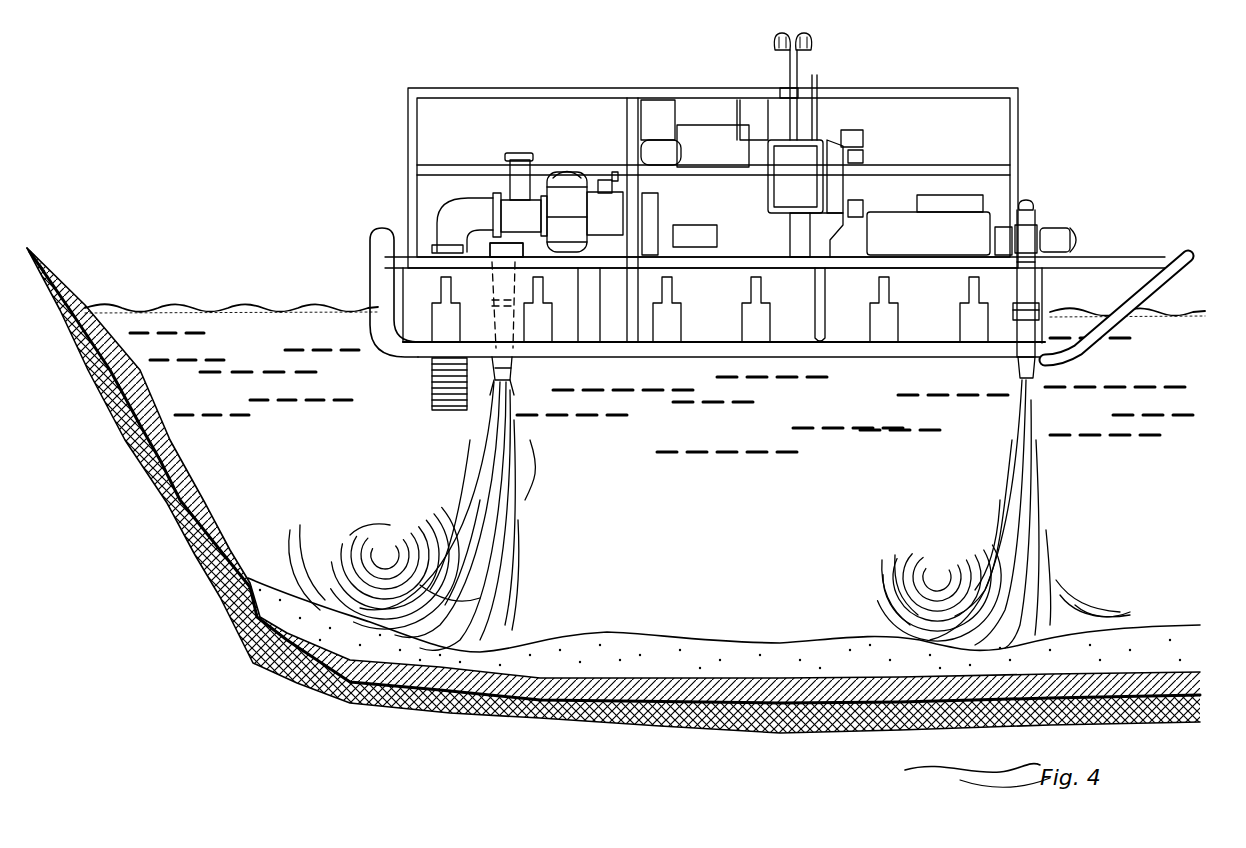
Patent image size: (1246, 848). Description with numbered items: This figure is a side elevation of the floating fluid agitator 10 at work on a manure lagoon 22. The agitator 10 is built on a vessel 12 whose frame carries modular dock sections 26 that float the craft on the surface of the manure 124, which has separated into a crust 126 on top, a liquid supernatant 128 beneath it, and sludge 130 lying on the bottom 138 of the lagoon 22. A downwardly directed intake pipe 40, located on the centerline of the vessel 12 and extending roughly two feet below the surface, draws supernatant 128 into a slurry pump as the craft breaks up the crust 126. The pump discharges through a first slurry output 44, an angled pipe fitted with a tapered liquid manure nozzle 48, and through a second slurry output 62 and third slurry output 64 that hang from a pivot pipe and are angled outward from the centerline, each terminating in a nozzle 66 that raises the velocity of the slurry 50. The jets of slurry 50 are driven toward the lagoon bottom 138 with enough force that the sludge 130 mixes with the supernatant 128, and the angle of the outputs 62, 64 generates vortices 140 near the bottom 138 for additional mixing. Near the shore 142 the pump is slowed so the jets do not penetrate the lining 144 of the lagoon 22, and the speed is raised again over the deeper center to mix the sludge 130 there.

The floating fluid agitator 10 is at (508, 88).
The vessel 12 is at (1150, 262).
The manure lagoon 22 is at (217, 260).
The modular dock sections 26 is at (473, 282).
The intake pipe 40 is at (440, 405).
The first slurry output 44 is at (1050, 330).
The liquid manure nozzle 48 is at (1042, 367).
The slurry 50 is at (500, 455).
The second slurry output 62 is at (395, 262).
The third slurry output 64 is at (395, 262).
The nozzle 66 is at (505, 370).
The manure 124 is at (258, 302).
The crust 126 is at (208, 305).
The supernatant 128 is at (1165, 513).
The sludge 130 is at (845, 655).
The bottom 138 is at (775, 690).
The vortices 140 is at (305, 540).
The shore 142 is at (30, 250).
The lining 144 is at (215, 520).